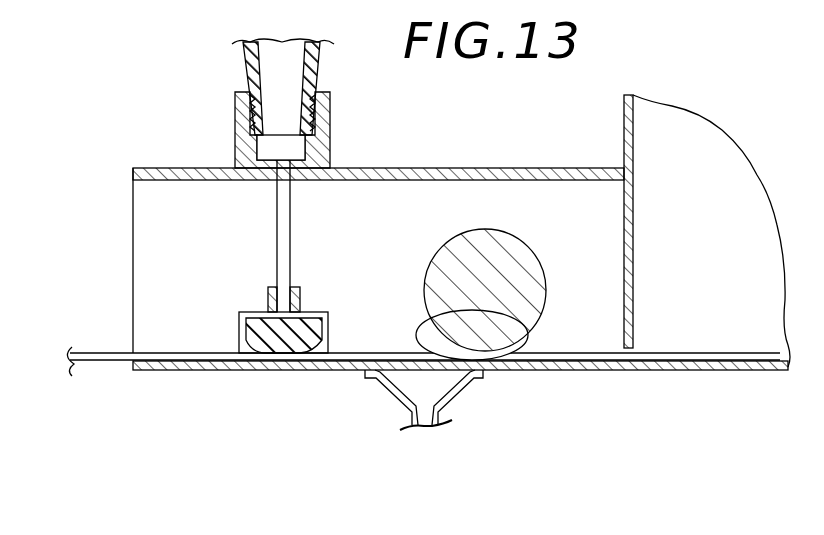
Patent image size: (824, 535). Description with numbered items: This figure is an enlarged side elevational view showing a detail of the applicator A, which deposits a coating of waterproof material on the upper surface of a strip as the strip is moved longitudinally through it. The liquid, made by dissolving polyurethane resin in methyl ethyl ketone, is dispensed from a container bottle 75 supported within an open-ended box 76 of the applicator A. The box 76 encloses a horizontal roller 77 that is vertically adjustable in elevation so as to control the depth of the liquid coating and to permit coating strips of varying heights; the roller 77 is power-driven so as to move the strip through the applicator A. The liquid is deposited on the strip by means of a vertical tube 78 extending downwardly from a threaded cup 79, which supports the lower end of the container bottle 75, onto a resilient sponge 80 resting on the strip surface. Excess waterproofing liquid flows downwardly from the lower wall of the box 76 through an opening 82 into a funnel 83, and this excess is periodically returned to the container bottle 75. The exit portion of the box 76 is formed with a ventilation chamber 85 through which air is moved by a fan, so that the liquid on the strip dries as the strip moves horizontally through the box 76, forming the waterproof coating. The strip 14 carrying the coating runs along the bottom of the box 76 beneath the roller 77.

The belt / strip 14 is at (526, 367).
The container bottle 75 is at (242, 52).
The open-ended box 76 is at (152, 168).
The horizontal roller 77 is at (505, 252).
The vertical tube 78 is at (277, 230).
The threaded cup 79 is at (318, 140).
The resilient sponge 80 is at (245, 330).
The opening 82 is at (393, 378).
The funnel 83 is at (399, 405).
The ventilation chamber 85 is at (707, 231).
The applicator A is at (548, 167).